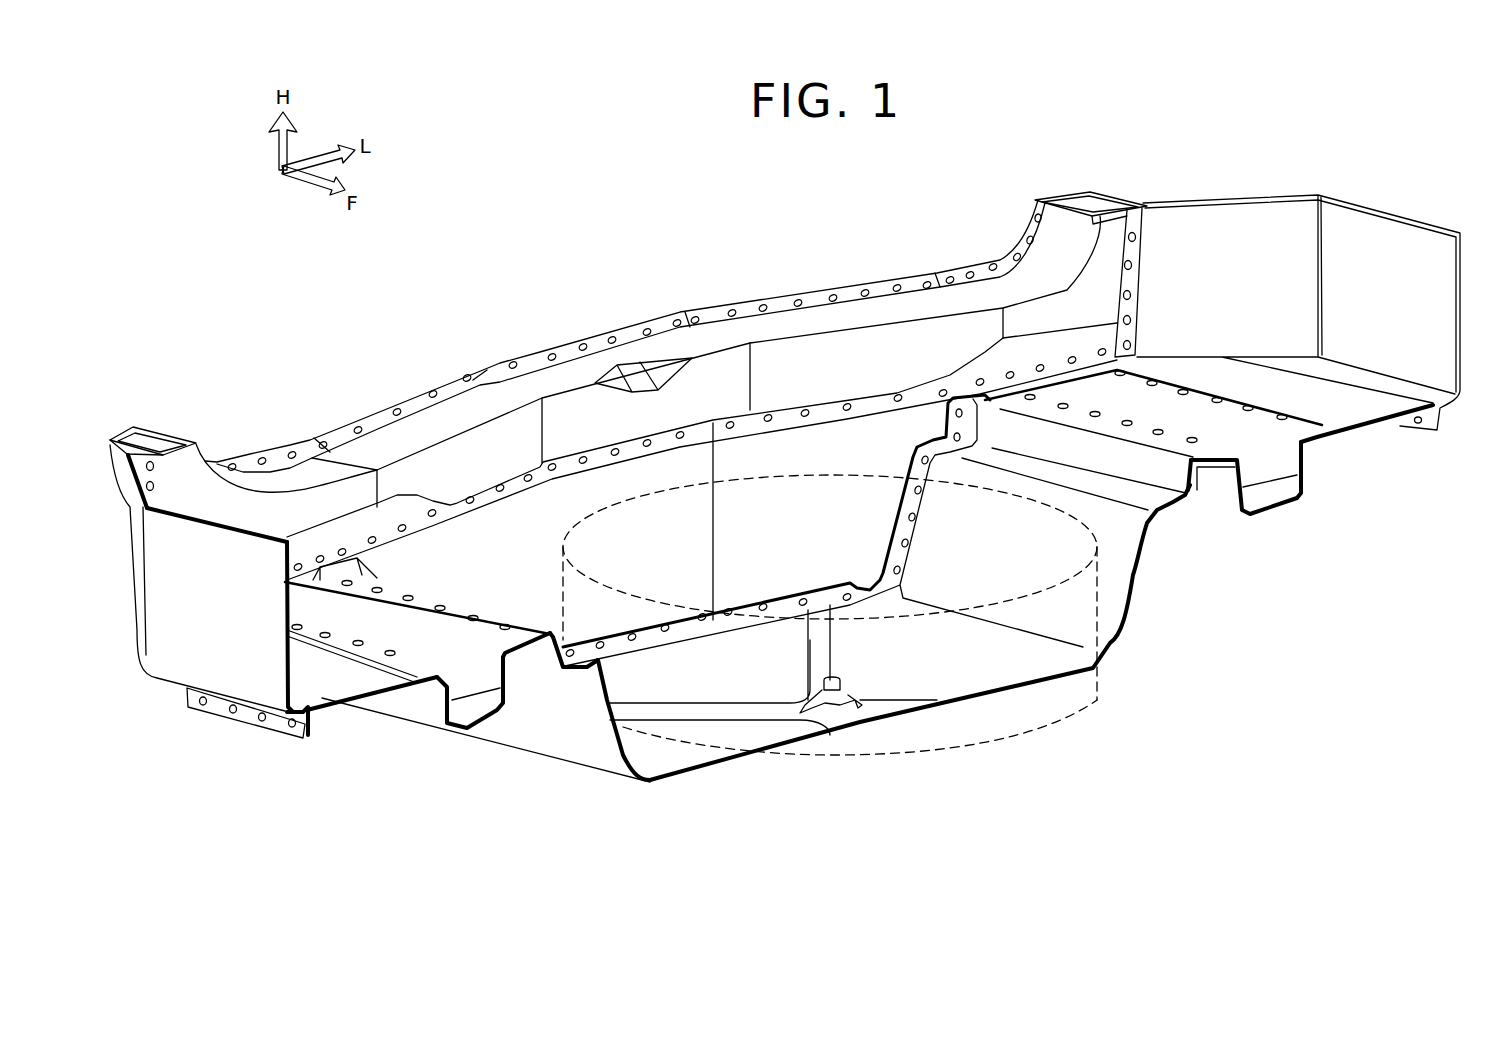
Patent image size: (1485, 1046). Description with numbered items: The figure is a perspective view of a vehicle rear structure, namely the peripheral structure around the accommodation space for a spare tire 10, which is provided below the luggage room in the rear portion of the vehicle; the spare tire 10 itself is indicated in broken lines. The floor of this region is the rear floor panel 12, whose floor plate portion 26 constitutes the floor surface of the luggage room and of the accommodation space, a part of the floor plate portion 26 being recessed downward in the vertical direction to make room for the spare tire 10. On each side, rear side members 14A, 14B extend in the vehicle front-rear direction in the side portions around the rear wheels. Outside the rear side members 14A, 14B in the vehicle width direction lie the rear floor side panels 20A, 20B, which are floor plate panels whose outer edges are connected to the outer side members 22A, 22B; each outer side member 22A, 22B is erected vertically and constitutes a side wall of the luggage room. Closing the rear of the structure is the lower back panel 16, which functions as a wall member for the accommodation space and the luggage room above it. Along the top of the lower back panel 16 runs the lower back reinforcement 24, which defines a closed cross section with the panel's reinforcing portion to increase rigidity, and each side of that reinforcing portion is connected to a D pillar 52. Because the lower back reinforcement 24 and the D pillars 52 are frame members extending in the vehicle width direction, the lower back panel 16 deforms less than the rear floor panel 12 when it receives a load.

The spare tire 10 is at (1067, 720).
The rear floor panel 12 is at (860, 624).
The floor plate portion 26 is at (553, 738).
The rear side member 14A is at (1222, 493).
The rear side member 14B is at (390, 707).
The lower back panel 16 is at (867, 443).
The rear floor side panel 20A is at (1347, 401).
The rear floor side panel 20B is at (323, 677).
The outer side member 22A is at (1247, 213).
The outer side member 22B is at (187, 662).
The lower back reinforcement 24 is at (537, 383).
The D pillar 52 is at (162, 438).